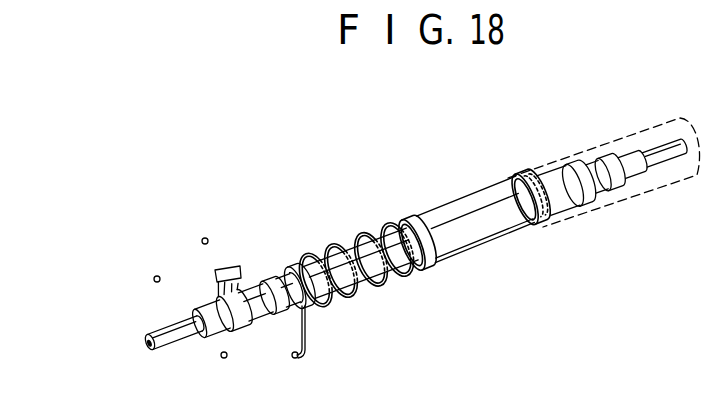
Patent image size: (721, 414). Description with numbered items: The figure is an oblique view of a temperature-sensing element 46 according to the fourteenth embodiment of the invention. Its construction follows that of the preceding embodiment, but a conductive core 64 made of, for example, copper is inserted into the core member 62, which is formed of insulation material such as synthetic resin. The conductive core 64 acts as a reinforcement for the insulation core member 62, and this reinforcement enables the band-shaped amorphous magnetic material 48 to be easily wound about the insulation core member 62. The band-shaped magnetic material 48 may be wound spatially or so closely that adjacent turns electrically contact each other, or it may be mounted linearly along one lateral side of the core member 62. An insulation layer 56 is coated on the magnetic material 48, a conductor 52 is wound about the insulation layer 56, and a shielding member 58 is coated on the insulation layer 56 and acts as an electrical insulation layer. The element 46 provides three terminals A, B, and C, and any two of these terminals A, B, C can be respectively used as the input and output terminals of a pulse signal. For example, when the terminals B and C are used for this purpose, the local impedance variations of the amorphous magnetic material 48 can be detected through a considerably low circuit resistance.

The temperature-sensing element 46 is at (510, 170).
The band-shaped amorphous magnetic material 48 is at (245, 276).
The conductor 52 is at (303, 360).
The insulation layer 56 is at (373, 282).
The shielding member 58 is at (450, 207).
The insulation core member 62 is at (206, 310).
The conductive core 64 is at (148, 345).
The terminal A is at (218, 270).
The terminal B is at (174, 323).
The terminal C is at (292, 355).